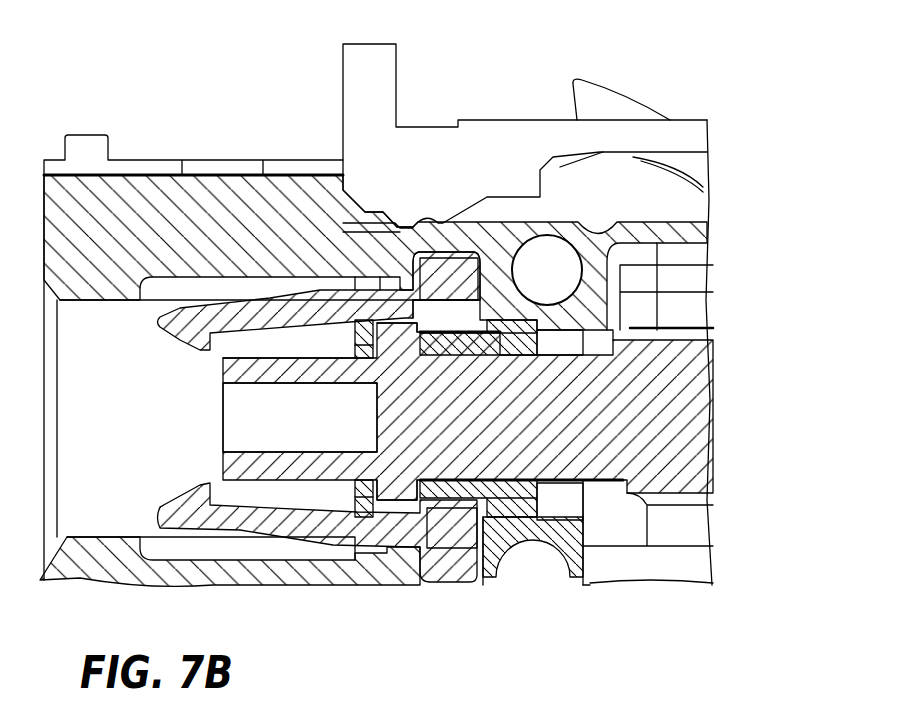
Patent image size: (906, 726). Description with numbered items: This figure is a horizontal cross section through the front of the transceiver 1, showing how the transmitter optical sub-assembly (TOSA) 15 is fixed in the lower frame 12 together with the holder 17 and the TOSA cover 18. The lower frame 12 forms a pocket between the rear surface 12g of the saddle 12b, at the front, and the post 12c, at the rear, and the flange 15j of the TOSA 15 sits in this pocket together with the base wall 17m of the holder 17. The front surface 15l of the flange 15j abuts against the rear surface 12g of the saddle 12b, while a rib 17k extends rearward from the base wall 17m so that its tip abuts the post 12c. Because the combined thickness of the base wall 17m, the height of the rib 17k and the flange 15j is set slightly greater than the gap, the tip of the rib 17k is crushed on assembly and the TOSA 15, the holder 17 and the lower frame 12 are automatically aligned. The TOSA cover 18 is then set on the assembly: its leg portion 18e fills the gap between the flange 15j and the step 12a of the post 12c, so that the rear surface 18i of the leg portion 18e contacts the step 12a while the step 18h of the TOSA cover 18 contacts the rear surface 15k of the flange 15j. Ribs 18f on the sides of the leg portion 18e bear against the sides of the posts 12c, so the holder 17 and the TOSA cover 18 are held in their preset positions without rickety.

The transceiver 1 is at (131, 105).
The lower frame 12 is at (288, 185).
The step 12a is at (558, 346).
The saddle 12b is at (364, 336).
The post 12c is at (593, 322).
The rear surface of the saddle 12g is at (424, 312).
The transmitter optical sub-assembly (TOSA) 15 is at (727, 414).
The flange 15j is at (387, 352).
The rear surface of the flange 15k is at (424, 350).
The front surface of the flange 15l is at (350, 362).
The holder 17 is at (183, 333).
The rib 17k is at (481, 245).
The base wall 17m is at (437, 250).
The TOSA cover 18 is at (522, 320).
The leg portion 18e is at (515, 522).
The rib 18f is at (498, 346).
The step 18h is at (416, 484).
The rear surface of the leg portion 18i is at (540, 507).